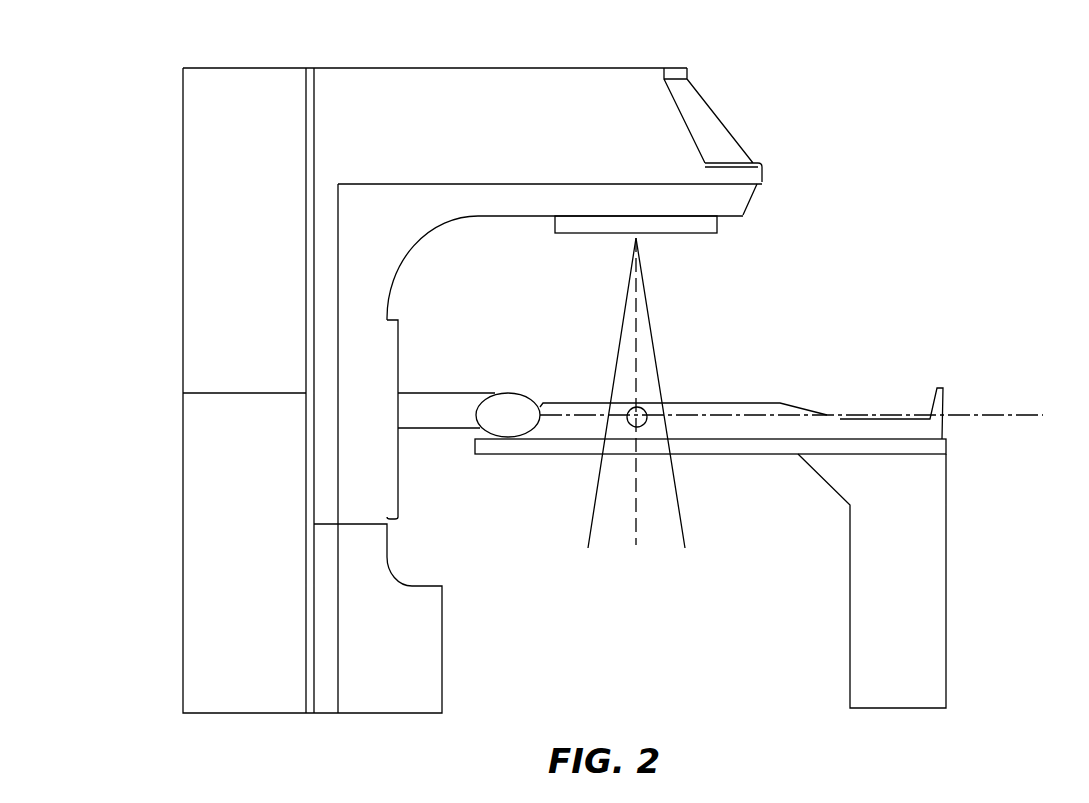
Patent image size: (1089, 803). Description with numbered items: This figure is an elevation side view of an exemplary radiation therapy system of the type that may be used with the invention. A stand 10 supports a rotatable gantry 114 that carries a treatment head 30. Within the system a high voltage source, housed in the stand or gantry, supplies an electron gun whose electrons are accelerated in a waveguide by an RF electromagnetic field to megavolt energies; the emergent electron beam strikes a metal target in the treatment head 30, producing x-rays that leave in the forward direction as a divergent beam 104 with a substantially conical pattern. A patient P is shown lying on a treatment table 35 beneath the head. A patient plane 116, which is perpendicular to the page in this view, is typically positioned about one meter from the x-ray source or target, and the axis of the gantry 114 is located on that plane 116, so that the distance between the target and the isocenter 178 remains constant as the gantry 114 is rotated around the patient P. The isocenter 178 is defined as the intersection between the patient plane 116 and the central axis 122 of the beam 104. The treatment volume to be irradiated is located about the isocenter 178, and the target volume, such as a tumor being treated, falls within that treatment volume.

The stand 10 is at (492, 371).
The gantry 114 is at (436, 220).
The treatment head 30 is at (740, 197).
The divergent beam 104 is at (627, 291).
The central axis of beam 122 is at (637, 545).
The isocenter 178 is at (629, 426).
The treatment table 35 is at (750, 447).
The patient P is at (840, 416).
The patient plane 116 is at (990, 417).